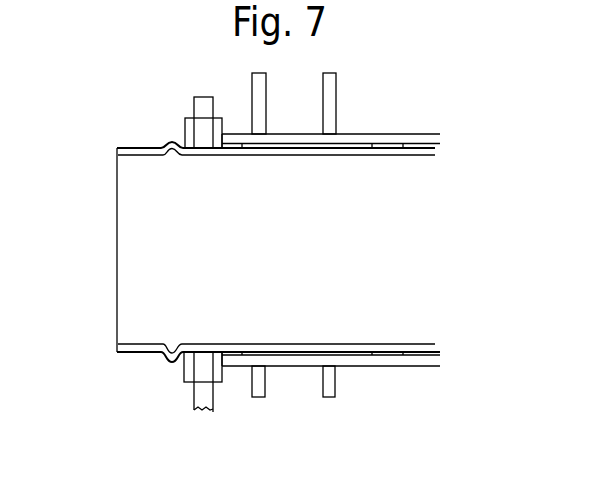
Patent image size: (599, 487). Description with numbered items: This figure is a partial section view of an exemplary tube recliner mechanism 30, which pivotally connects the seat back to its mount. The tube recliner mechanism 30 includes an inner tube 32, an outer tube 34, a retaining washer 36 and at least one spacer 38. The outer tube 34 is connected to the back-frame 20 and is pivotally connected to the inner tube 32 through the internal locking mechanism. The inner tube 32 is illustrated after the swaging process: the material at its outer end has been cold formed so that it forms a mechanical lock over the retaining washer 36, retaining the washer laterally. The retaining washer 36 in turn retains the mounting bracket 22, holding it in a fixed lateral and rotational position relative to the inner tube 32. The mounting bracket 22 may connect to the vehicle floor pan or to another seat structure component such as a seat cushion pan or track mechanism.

The inner tube 32 is at (137, 148).
The retaining washer 36 is at (188, 130).
The outer tube 34 is at (418, 135).
The back-frame 20 is at (328, 100).
The spacer 38 is at (390, 366).
The mounting bracket 22 is at (202, 395).
The tube recliner mechanism 30 is at (446, 247).